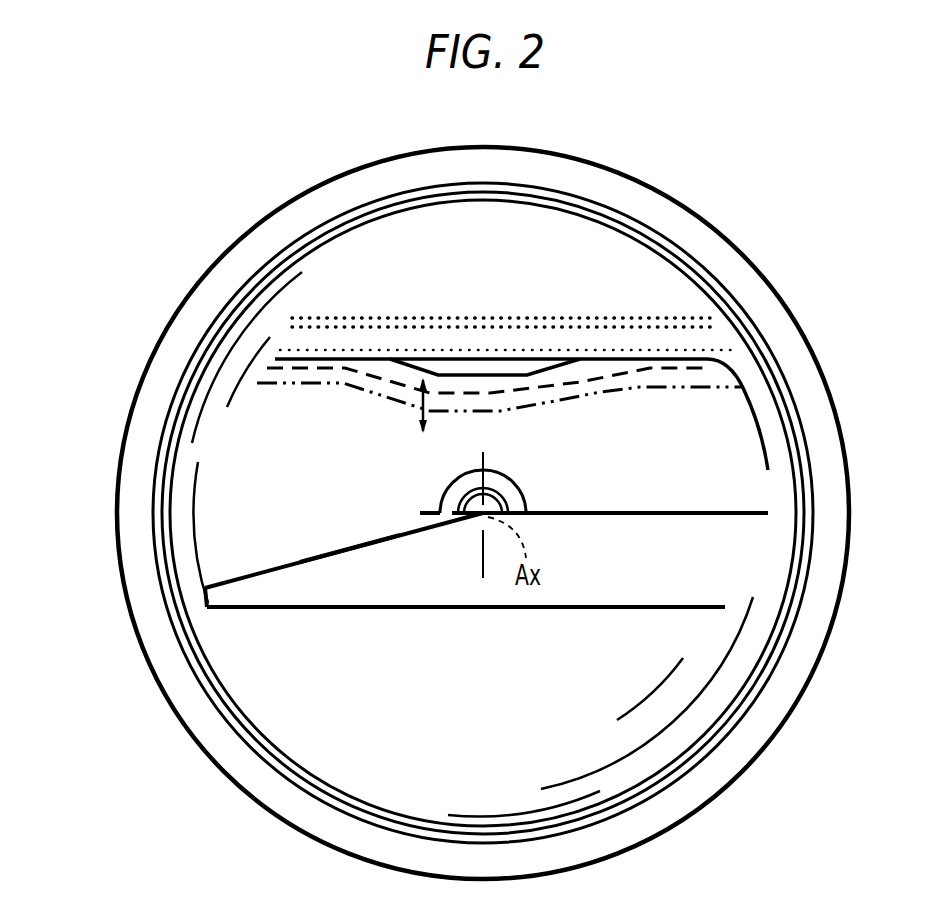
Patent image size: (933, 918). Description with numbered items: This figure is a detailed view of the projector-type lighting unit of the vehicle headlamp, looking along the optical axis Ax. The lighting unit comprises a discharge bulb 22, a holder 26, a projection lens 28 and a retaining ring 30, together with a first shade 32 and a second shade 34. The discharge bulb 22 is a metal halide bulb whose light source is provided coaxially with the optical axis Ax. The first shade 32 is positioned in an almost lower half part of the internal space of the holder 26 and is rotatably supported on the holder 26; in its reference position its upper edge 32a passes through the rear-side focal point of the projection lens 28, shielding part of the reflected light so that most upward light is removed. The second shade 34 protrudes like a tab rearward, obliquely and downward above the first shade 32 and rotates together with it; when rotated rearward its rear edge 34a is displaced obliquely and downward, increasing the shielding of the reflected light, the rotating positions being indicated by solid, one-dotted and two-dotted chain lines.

The discharge bulb 22 is at (451, 484).
The holder 26 is at (697, 598).
The projection lens 28 is at (795, 592).
The retaining ring 30 is at (812, 348).
The first shade 32 is at (272, 567).
The upper edge 32a is at (350, 548).
The second shade 34 is at (393, 317).
The rear edge 34a is at (522, 375).